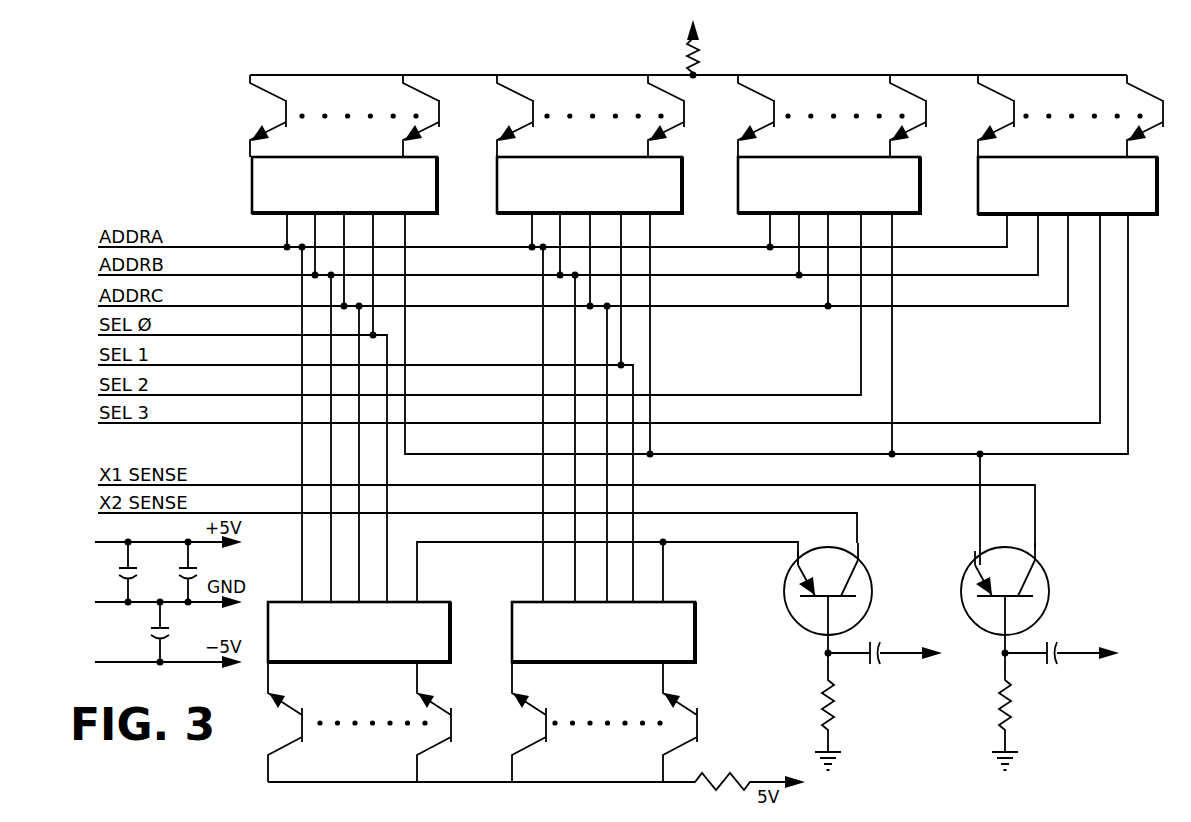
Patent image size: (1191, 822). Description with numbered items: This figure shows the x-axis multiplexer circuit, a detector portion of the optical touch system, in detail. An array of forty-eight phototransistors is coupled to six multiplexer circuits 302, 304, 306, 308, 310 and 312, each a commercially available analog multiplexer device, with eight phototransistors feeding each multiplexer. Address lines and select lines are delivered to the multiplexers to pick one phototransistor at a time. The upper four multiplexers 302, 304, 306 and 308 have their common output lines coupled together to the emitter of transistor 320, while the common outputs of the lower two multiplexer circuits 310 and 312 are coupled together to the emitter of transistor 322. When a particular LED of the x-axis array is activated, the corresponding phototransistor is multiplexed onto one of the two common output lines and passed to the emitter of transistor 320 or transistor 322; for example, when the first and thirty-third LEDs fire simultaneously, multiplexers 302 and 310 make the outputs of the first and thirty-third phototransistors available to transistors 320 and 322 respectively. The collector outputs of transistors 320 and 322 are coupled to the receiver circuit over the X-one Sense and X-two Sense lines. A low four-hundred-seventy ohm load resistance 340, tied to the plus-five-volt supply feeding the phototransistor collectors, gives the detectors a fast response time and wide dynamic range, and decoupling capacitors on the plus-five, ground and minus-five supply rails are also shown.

The multiplexer circuit 302 is at (250, 178).
The multiplexer circuit 304 is at (497, 192).
The multiplexer circuit 306 is at (738, 192).
The multiplexer circuit 308 is at (978, 192).
The multiplexer circuit 310 is at (452, 611).
The multiplexer circuit 312 is at (698, 611).
The transistor 320 is at (1050, 592).
The transistor 322 is at (873, 592).
The load resistance 340 is at (688, 52).